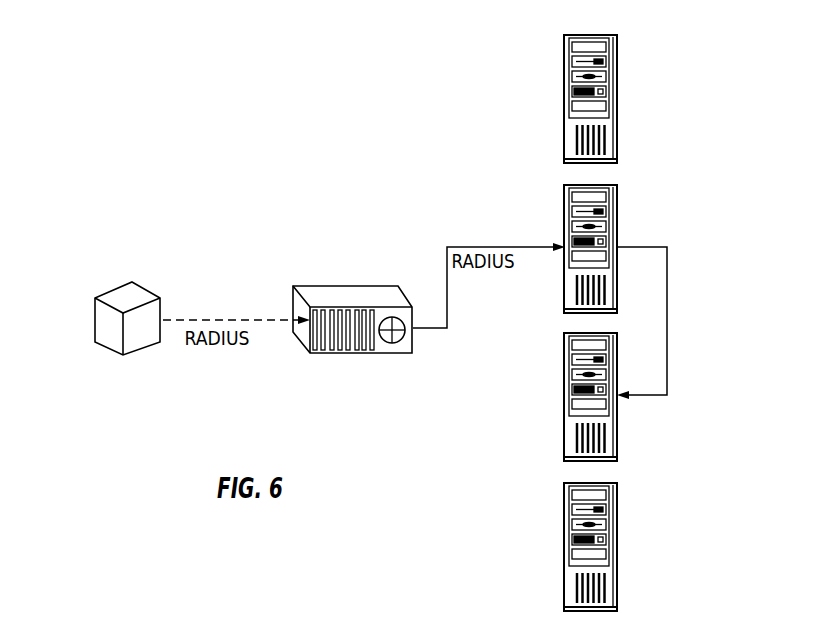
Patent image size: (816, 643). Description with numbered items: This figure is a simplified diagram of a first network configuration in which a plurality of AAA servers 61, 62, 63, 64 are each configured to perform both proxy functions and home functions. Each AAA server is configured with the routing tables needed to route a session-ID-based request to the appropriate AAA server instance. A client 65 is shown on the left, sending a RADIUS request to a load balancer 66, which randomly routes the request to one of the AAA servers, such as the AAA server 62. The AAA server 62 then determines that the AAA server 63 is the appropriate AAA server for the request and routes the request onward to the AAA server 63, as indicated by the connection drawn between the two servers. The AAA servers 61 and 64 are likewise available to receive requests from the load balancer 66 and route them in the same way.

The AAA server 61 is at (602, 99).
The AAA server 62 is at (602, 244).
The AAA server 63 is at (602, 399).
The AAA server 64 is at (602, 549).
The client 65 is at (95, 320).
The load balancer 66 is at (343, 286).